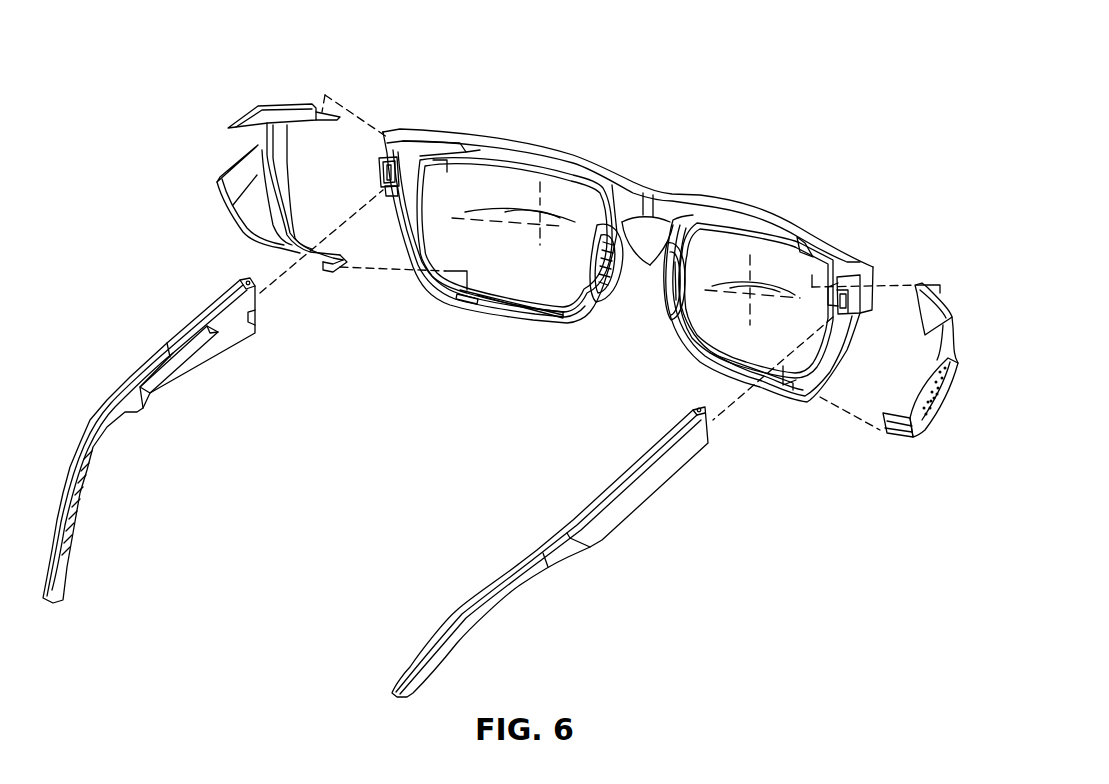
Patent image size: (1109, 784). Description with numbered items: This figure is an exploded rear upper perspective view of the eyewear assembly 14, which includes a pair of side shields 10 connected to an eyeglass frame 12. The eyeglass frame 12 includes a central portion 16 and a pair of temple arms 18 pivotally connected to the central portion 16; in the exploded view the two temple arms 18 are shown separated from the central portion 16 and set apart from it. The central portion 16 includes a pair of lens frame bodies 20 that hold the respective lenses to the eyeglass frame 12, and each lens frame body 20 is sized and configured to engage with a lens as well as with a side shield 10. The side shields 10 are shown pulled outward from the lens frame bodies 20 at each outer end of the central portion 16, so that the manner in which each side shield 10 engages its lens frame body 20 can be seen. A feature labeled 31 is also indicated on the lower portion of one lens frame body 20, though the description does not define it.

The side shield 10 is at (236, 104).
The eyeglass frame 12 is at (752, 186).
The eyewear assembly 14 is at (377, 70).
The central portion 16 is at (650, 178).
The temple arms 18 is at (165, 345).
The lens frame body 20 is at (503, 137).
The lens retaining tab 31 is at (468, 302).